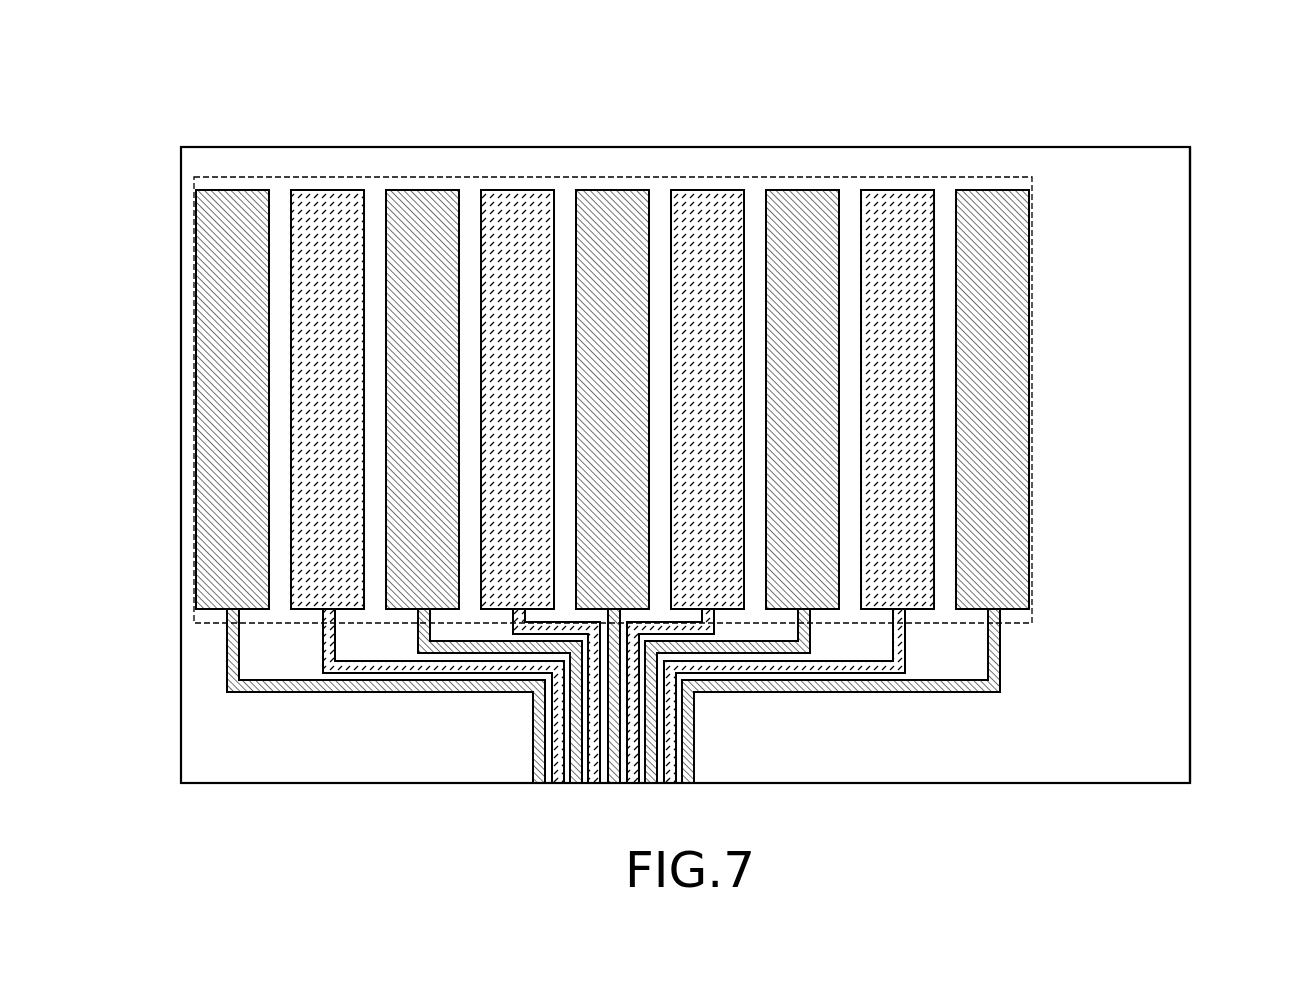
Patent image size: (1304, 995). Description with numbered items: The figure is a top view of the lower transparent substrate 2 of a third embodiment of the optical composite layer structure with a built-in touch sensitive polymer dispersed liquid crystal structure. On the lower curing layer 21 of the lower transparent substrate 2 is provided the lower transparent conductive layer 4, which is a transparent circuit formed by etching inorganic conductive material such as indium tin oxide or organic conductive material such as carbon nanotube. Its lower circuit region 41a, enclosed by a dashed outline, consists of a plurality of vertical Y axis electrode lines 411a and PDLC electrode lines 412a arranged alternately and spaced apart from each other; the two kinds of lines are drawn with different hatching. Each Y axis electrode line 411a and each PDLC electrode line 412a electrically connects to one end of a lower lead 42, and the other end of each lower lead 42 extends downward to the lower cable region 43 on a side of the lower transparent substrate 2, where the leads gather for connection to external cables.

The lower transparent substrate 2 is at (1138, 147).
The lower curing layer 21 is at (1175, 183).
The lower transparent conductive layer 4 is at (753, 172).
The lower circuit region 41a is at (913, 177).
The Y axis electrode line 411a is at (228, 213).
The PDLC electrode line 412a is at (323, 213).
The lower lead 42 is at (926, 696).
The lower cable region 43 is at (529, 731).